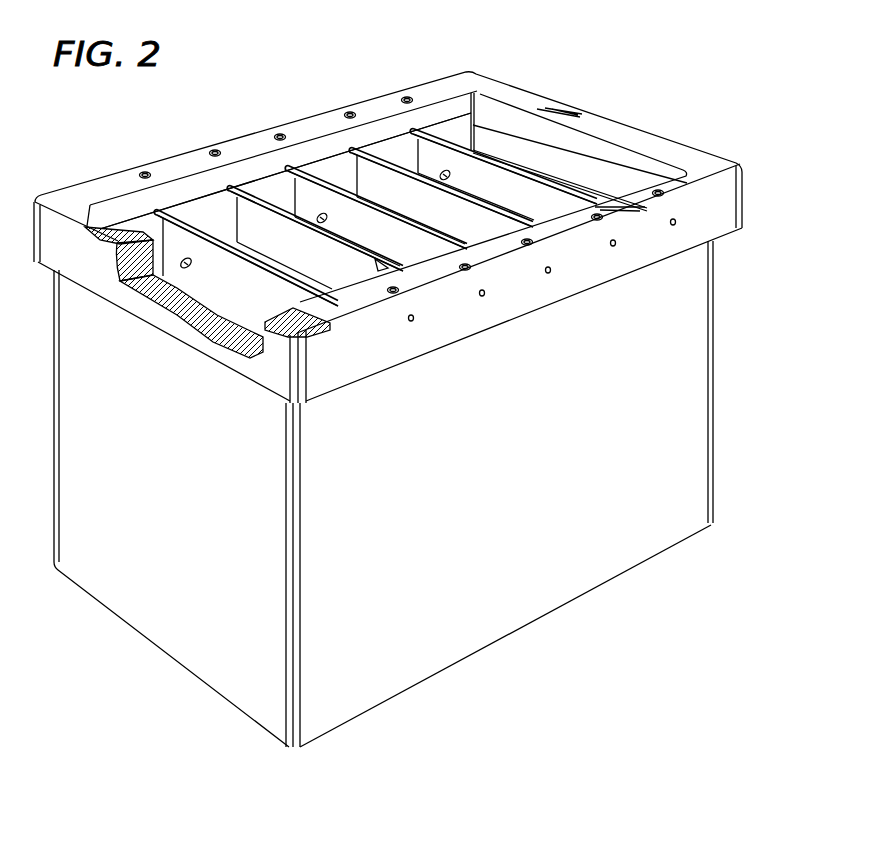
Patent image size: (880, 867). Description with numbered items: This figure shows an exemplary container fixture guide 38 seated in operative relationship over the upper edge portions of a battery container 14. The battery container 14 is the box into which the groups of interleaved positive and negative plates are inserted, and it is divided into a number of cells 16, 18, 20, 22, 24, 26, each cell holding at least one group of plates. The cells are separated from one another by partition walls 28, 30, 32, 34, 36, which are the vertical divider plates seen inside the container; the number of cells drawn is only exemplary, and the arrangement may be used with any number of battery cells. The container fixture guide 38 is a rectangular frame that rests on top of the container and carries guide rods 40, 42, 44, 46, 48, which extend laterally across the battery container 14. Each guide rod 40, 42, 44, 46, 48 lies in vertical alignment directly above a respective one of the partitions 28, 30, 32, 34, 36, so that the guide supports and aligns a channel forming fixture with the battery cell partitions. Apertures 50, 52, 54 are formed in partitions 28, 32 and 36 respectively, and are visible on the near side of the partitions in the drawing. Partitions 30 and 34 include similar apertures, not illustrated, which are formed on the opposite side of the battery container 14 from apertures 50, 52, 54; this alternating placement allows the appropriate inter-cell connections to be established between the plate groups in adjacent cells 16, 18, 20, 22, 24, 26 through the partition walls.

The battery container 14 is at (518, 513).
The cell 16 is at (288, 296).
The cell 18 is at (345, 282).
The cell 20 is at (427, 257).
The cell 22 is at (478, 233).
The cell 24 is at (550, 213).
The cell 26 is at (585, 188).
The partition wall 28 is at (270, 295).
The partition wall 30 is at (321, 269).
The partition wall 32 is at (412, 253).
The partition wall 34 is at (449, 225).
The partition wall 36 is at (535, 214).
The container fixture guide 38 is at (723, 201).
The guide rod 40 is at (186, 225).
The guide rod 42 is at (258, 200).
The guide rod 44 is at (324, 183).
The guide rod 46 is at (388, 164).
The guide rod 48 is at (449, 144).
The aperture 50 is at (189, 268).
The aperture 52 is at (329, 219).
The aperture 54 is at (452, 177).